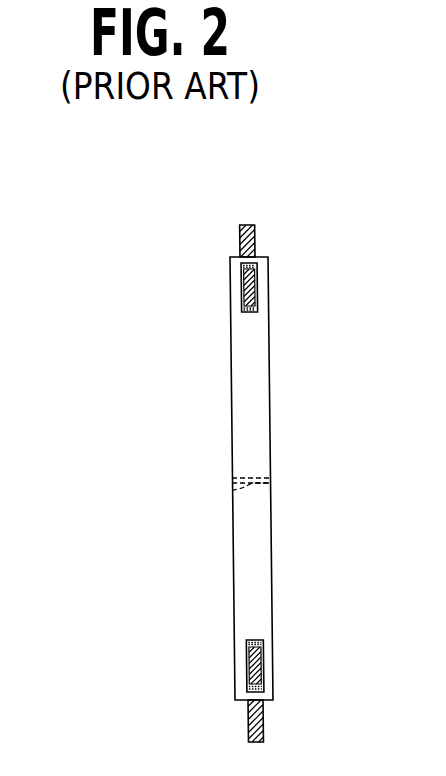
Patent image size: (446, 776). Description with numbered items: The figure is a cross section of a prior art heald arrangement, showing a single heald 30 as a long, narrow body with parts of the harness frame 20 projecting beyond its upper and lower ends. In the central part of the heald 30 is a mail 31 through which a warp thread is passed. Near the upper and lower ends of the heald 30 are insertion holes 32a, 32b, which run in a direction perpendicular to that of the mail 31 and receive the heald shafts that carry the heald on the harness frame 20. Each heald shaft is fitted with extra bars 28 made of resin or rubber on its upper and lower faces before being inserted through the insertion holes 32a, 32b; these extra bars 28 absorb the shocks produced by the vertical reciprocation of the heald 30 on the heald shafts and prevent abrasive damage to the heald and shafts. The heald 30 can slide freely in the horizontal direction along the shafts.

The harness frame 20 is at (257, 236).
The extra bar 28 is at (252, 642).
The heald 30 is at (231, 424).
The mail 31 is at (232, 490).
The upper insertion hole 32a is at (248, 314).
The lower insertion hole 32b is at (253, 686).